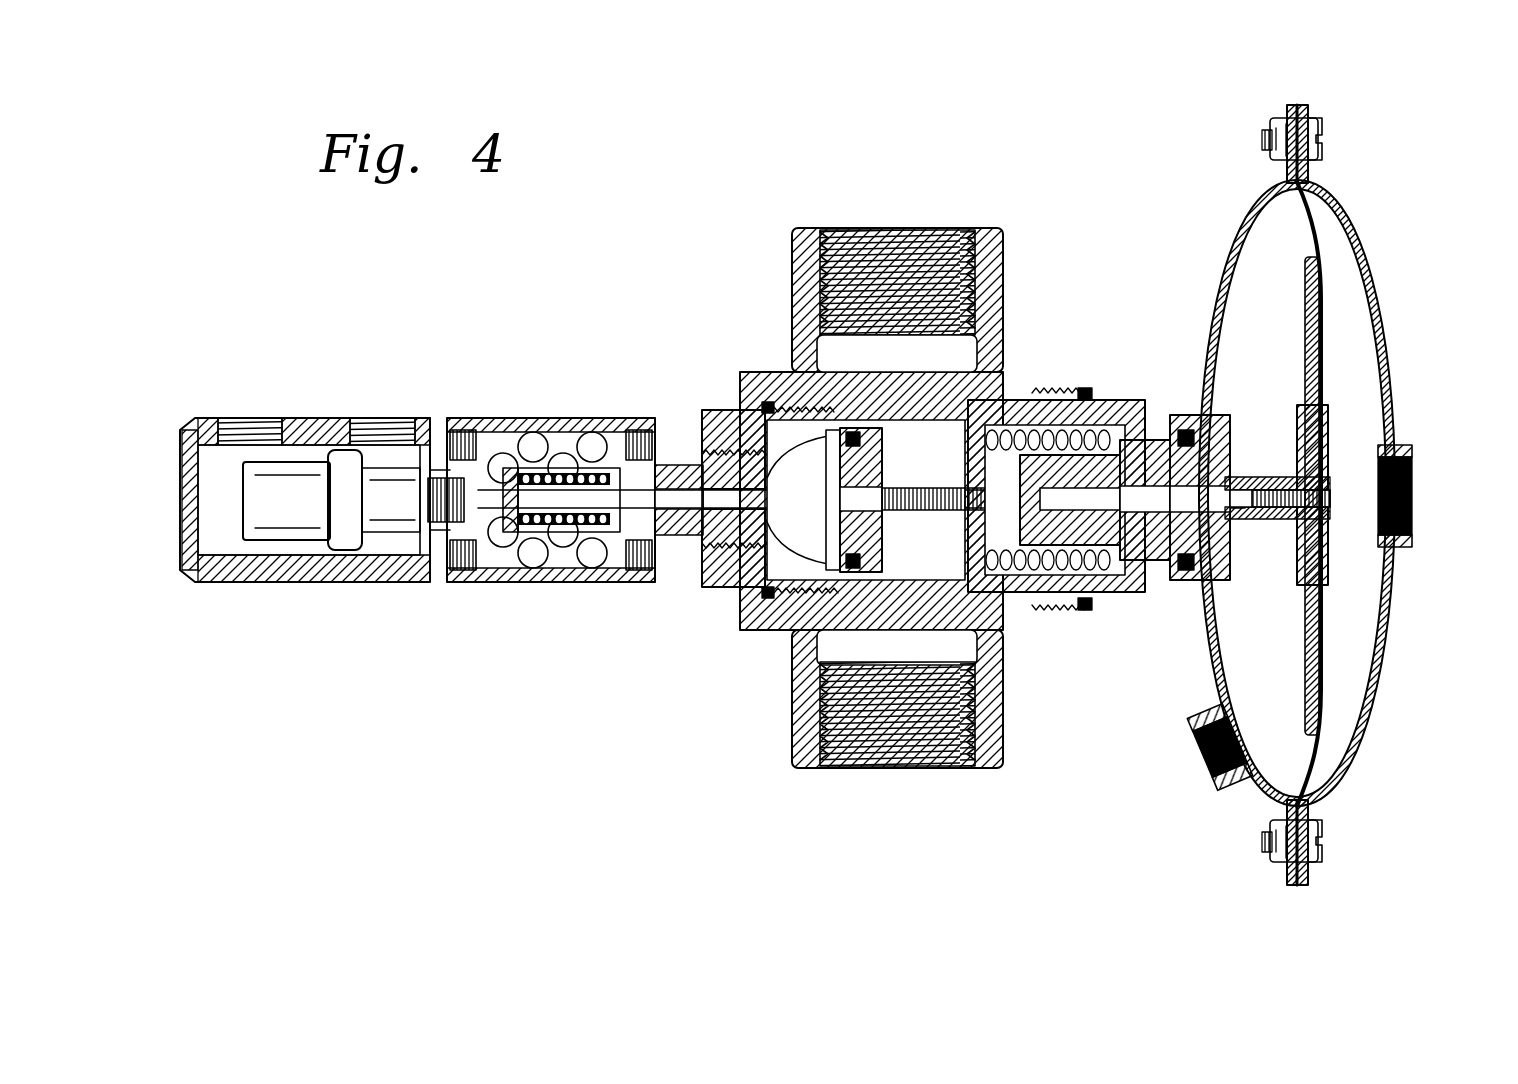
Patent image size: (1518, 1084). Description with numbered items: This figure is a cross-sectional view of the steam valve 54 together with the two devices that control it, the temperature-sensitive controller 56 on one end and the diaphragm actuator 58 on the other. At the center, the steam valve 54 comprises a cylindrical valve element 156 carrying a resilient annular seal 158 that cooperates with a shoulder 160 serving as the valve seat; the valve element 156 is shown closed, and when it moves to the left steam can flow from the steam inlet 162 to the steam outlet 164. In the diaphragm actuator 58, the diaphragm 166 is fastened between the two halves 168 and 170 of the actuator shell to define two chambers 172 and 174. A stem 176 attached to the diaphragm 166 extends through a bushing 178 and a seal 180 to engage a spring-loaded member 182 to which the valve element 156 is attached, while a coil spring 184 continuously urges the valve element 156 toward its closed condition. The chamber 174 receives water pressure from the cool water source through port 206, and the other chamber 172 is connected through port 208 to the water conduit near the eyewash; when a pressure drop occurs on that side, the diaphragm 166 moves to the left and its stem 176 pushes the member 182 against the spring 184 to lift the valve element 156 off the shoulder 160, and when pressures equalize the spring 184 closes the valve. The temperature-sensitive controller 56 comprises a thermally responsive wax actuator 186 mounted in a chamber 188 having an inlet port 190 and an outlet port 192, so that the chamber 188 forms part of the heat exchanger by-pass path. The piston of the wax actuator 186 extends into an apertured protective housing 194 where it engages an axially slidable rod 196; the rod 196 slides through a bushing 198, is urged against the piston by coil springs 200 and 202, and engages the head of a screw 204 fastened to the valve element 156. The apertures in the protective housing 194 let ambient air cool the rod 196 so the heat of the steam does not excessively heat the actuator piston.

The steam valve 54 is at (775, 795).
The temperature-sensitive controller 56 is at (385, 622).
The diaphragm actuator 58 is at (1222, 830).
The valve element 156 is at (758, 565).
The seal 158 is at (820, 545).
The shoulder 160 is at (858, 585).
The steam inlet 162 is at (893, 768).
The steam outlet 164 is at (897, 228).
The diaphragm 166 is at (1312, 660).
The actuator shell half 168 is at (1375, 775).
The actuator shell half 170 is at (1212, 665).
The chamber 172 is at (1195, 630).
The chamber 174 is at (1385, 620).
The stem 176 is at (1240, 485).
The bushing 178 is at (1150, 470).
The seal 180 is at (1118, 415).
The spring-loaded member 182 is at (1040, 485).
The coil spring 184 is at (1012, 375).
The wax actuator 186 is at (272, 518).
The chamber 188 is at (228, 540).
The inlet port 190 is at (252, 418).
The outlet port 192 is at (388, 418).
The protective housing 194 is at (545, 418).
The rod 196 is at (668, 490).
The bushing 198 is at (690, 505).
The coil spring 200 is at (567, 540).
The coil spring 202 is at (540, 565).
The screw 204 is at (765, 430).
The port 206 is at (1415, 498).
The port 208 is at (1200, 752).